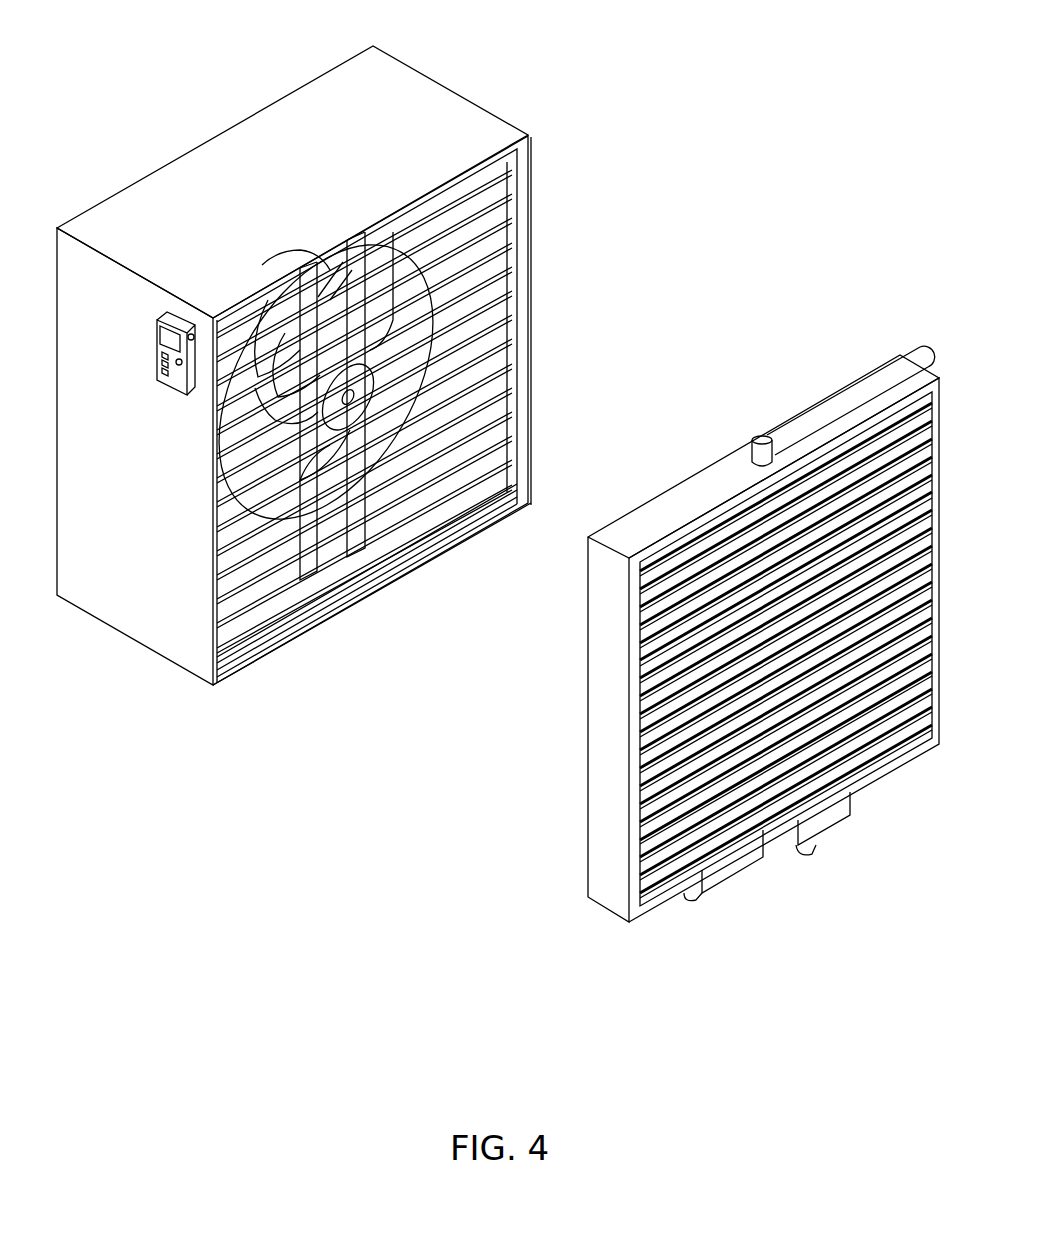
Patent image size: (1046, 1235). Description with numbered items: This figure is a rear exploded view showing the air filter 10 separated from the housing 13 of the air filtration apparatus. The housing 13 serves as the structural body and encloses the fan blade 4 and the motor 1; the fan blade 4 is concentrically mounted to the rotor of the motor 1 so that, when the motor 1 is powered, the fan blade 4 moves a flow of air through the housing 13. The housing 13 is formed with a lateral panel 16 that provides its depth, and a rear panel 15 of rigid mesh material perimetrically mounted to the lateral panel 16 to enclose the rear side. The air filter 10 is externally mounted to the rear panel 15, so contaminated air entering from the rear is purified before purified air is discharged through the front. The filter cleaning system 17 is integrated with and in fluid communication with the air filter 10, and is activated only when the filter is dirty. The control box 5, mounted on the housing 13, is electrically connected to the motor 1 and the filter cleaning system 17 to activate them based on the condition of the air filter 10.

The motor 1 is at (383, 380).
The fan blade 4 is at (393, 279).
The control box 5 is at (152, 338).
The air filter 10 is at (700, 480).
The housing 13 is at (460, 82).
The rear panel 15 is at (232, 647).
The lateral panel 16 is at (392, 64).
The filter cleaning system 17 is at (733, 883).